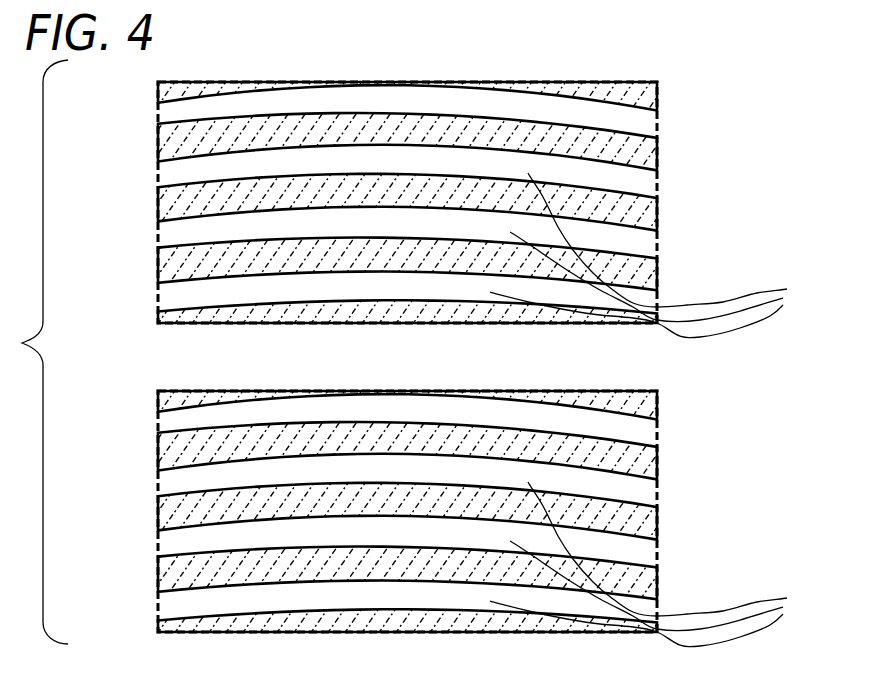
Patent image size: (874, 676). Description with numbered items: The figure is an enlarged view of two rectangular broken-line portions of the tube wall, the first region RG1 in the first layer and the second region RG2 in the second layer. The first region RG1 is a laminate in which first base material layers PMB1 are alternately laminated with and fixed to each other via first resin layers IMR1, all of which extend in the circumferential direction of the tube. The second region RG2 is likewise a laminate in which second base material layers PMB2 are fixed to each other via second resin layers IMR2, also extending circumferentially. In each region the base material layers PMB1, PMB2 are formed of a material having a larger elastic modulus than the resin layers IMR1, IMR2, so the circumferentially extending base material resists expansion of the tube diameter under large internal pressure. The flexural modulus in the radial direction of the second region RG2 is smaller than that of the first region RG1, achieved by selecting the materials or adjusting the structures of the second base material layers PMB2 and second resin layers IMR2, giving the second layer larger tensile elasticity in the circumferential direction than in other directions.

The first region RG1 is at (133, 124).
The second region RG2 is at (133, 436).
The first base material layers PMB1 is at (419, 202).
The second base material layers PMB2 is at (419, 511).
The first resin layers IMR1 is at (673, 255).
The second resin layers IMR2 is at (675, 564).